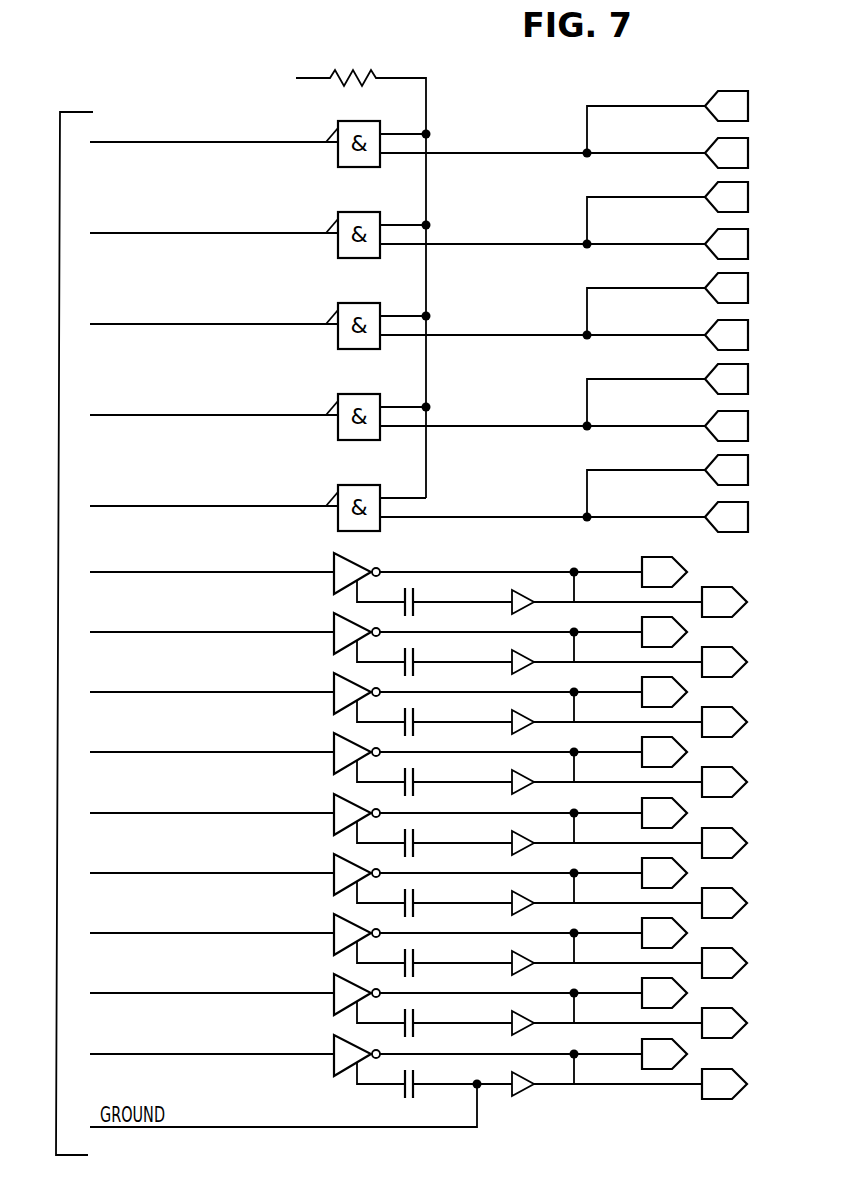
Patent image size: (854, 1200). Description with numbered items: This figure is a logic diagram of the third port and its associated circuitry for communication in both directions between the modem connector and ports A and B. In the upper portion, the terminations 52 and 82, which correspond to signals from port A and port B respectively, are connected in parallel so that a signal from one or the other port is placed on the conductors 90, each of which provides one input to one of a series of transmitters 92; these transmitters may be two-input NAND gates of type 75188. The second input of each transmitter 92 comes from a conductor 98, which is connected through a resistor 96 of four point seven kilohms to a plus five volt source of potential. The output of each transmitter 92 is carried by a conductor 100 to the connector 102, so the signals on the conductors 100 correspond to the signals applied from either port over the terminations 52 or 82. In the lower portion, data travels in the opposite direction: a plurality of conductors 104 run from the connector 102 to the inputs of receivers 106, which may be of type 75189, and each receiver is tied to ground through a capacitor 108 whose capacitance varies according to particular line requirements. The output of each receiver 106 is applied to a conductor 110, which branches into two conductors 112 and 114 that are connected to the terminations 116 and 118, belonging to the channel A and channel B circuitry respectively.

The terminations 52 is at (715, 102).
The terminations 82 is at (715, 149).
The conductors 90 is at (455, 152).
The transmitters 92 is at (340, 155).
The resistor 96 is at (385, 77).
The conductor 98 is at (428, 106).
The conductors 100 is at (138, 143).
The connector 102 is at (73, 109).
The conductors 104 is at (143, 573).
The receivers 106 is at (338, 578).
The capacitor 108 is at (415, 612).
The conductor 110 is at (458, 572).
The conductor 112 is at (578, 571).
The conductor 114 is at (574, 603).
The terminations 116 is at (688, 572).
The terminations 118 is at (731, 589).